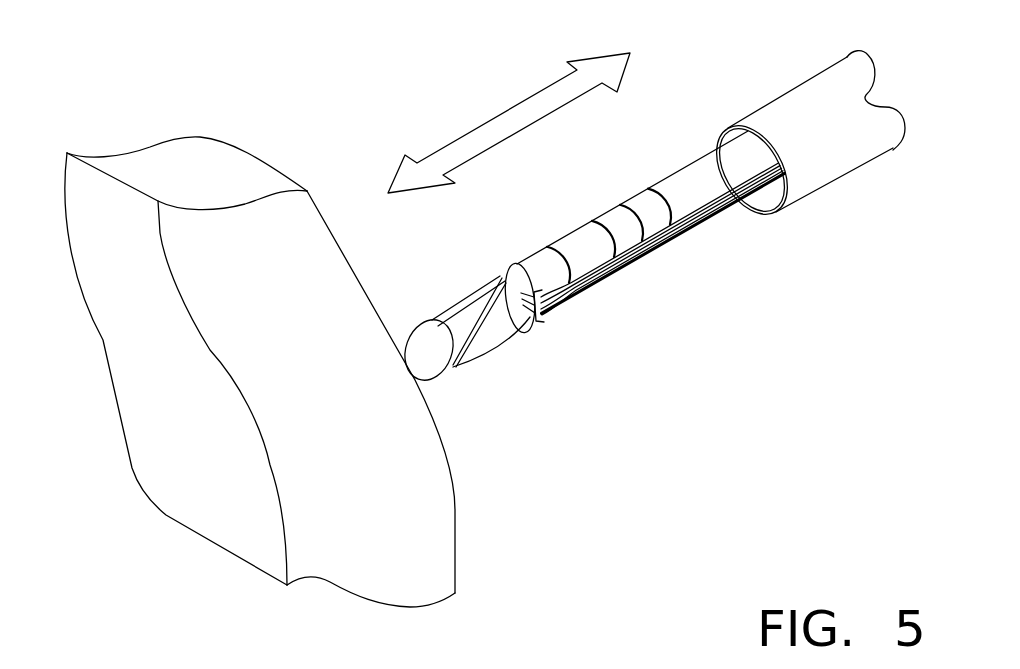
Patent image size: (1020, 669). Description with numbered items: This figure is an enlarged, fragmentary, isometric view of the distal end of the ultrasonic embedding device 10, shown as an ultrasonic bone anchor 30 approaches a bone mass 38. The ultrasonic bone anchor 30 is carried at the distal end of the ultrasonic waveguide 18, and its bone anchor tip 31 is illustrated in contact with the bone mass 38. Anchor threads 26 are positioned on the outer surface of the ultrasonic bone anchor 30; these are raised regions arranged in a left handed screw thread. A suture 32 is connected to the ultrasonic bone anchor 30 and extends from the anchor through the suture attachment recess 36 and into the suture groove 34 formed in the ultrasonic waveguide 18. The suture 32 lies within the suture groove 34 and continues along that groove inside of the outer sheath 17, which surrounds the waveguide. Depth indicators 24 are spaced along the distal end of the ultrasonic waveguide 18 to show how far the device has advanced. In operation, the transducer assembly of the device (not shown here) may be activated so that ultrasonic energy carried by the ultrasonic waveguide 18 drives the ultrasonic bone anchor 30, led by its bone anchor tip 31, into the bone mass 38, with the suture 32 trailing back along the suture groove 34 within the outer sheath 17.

The ultrasonic embedding device 10 is at (716, 42).
The outer sheath 17 is at (818, 189).
The ultrasonic waveguide 18 is at (683, 167).
The depth indicators 24 is at (646, 191).
The anchor threads 26 is at (480, 350).
The ultrasonic bone anchor 30 is at (478, 284).
The bone anchor tip 31 is at (417, 333).
The suture 32 is at (718, 212).
The suture groove 34 is at (588, 287).
The suture attachment recess 36 is at (536, 323).
The bone mass 38 is at (455, 510).